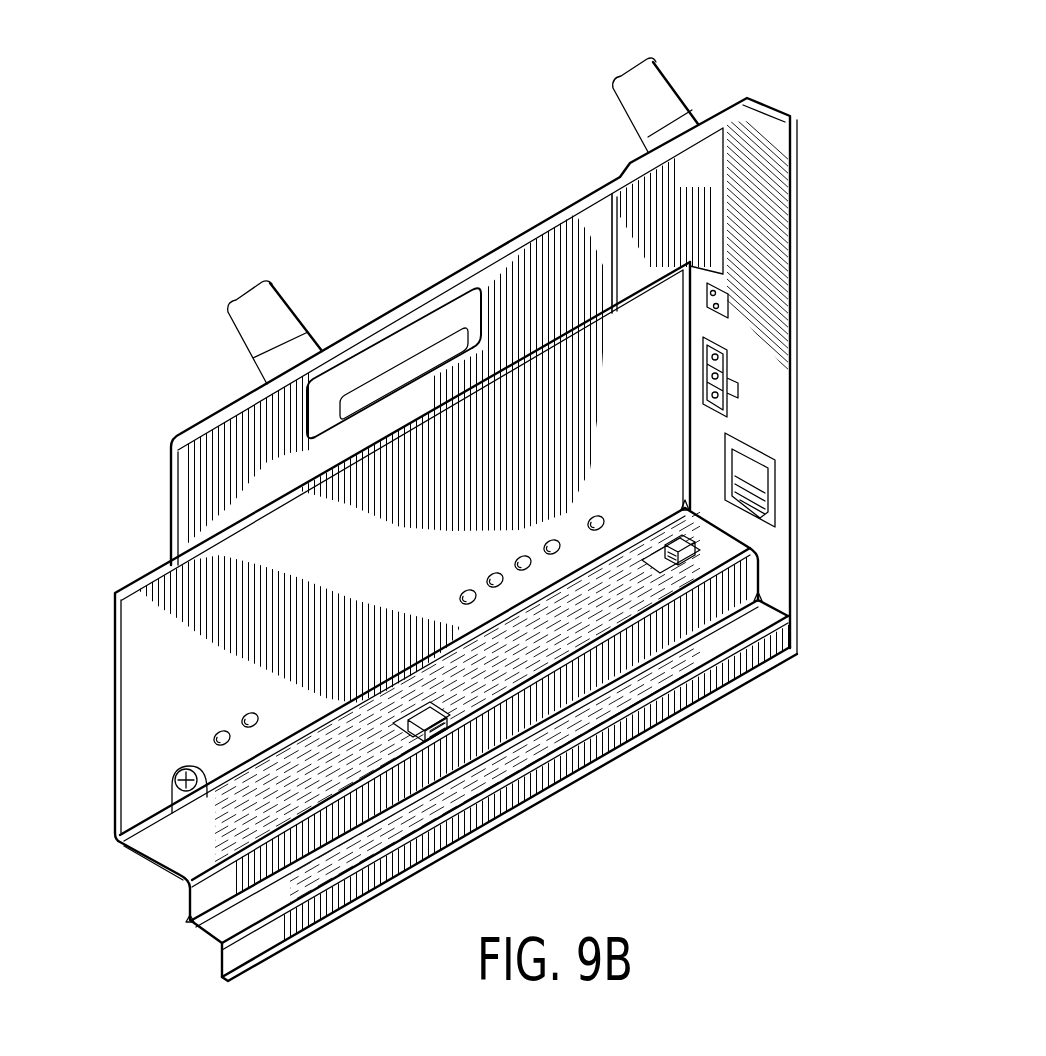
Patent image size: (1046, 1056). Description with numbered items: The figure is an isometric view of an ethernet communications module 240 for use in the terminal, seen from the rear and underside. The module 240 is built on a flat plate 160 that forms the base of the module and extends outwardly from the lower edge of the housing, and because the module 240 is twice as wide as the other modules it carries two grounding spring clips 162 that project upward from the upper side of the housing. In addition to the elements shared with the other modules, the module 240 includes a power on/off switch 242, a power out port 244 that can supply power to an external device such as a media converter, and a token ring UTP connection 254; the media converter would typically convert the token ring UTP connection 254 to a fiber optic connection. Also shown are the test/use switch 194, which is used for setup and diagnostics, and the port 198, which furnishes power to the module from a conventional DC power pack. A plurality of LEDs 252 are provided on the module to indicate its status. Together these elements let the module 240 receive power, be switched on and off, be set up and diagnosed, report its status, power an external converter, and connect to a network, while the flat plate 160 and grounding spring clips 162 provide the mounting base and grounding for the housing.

The flat plate 160 is at (767, 648).
The grounding spring clip 162 is at (253, 303).
The test/use switch 194 is at (430, 727).
The port 198 is at (718, 378).
The ethernet communications module 240 is at (474, 514).
The power on/off switch 242 is at (690, 558).
The power out port 244 is at (718, 302).
The LEDs 252 is at (245, 718).
The token ring UTP connection 254 is at (765, 492).